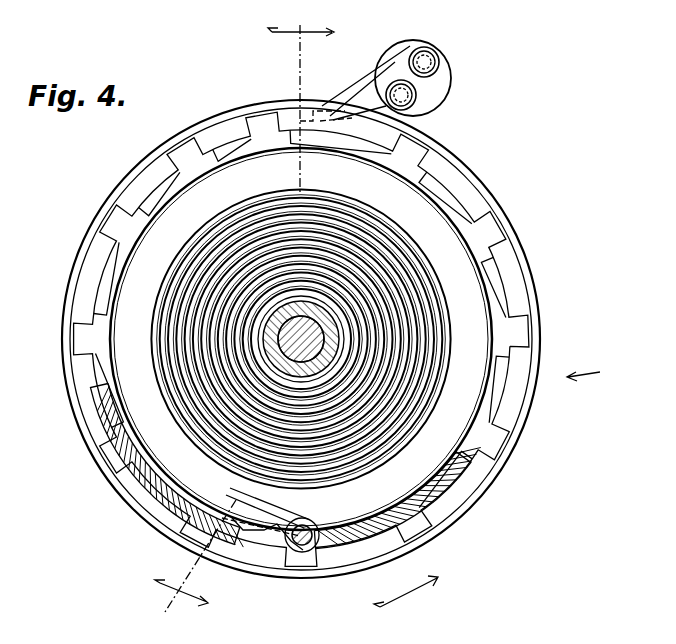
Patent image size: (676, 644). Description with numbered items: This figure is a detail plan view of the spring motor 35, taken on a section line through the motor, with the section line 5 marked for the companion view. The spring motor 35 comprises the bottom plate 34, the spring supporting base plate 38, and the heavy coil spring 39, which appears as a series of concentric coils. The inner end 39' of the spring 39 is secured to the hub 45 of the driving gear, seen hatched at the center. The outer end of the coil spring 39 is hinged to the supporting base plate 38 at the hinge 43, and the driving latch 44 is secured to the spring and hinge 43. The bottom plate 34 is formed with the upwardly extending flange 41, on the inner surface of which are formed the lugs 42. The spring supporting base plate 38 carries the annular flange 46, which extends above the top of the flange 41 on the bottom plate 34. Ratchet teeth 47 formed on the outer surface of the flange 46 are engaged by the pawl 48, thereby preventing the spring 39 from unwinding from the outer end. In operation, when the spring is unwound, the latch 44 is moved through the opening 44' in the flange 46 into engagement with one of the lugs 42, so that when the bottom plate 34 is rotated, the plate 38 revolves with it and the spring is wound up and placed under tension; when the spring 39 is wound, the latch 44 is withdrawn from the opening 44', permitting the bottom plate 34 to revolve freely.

The section line 5- 5 is at (244, 313).
The bottom plate 34 is at (458, 498).
The spring motor 35 is at (595, 377).
The spring supporting base plate 38 is at (310, 338).
The heavy coil spring 39 is at (342, 339).
The inner end of the spring 39' is at (364, 319).
The upwardly extending flange 41 is at (524, 420).
The lugs 42 is at (106, 223).
The hinge 43 is at (313, 528).
The driving latch 44 is at (267, 564).
The opening 44' is at (261, 565).
The hub 45 is at (330, 352).
The annular flange 46 is at (118, 281).
The ratchet teeth 47 is at (290, 122).
The pawl 48 is at (337, 108).